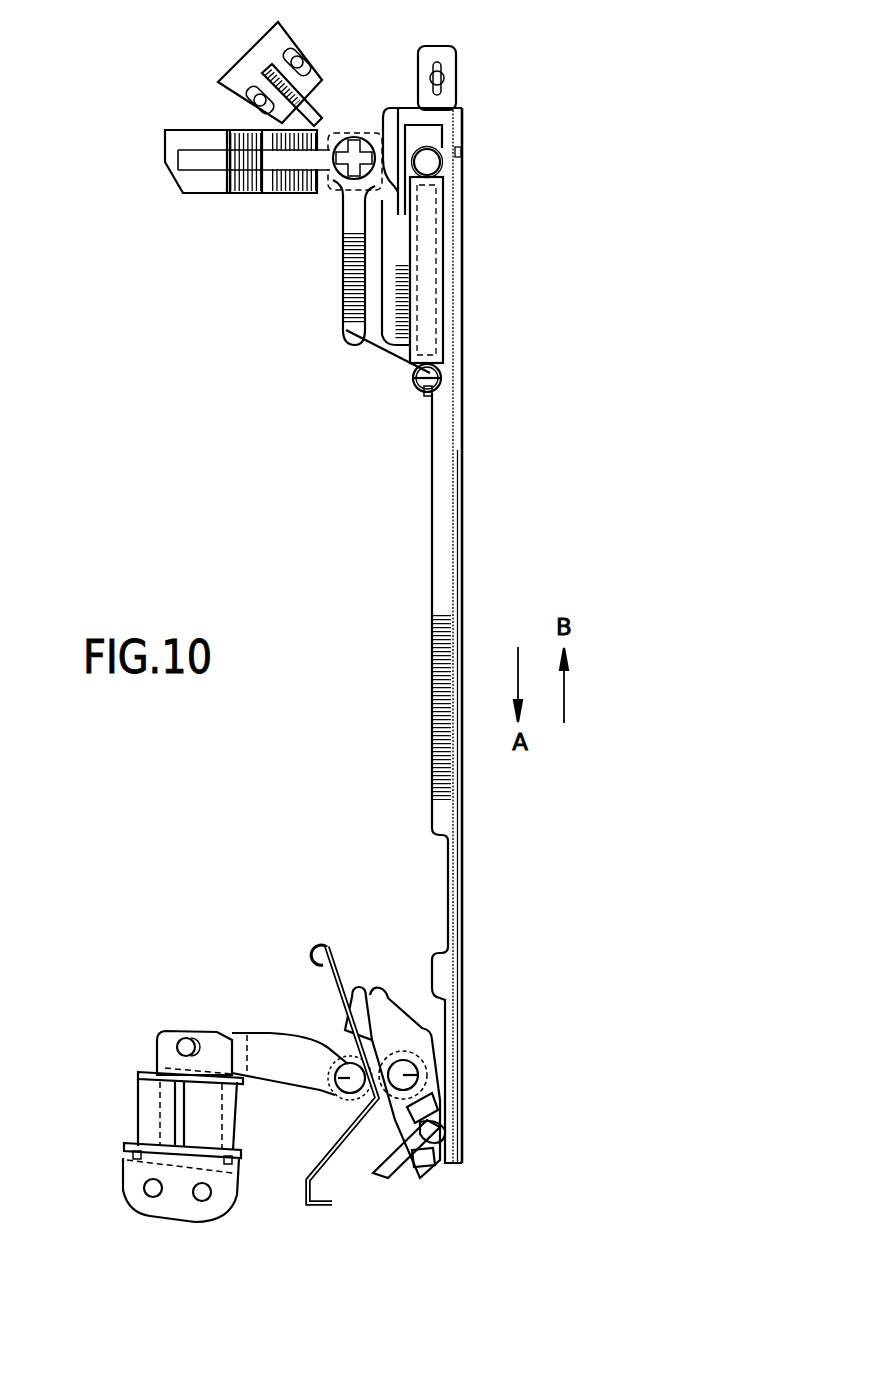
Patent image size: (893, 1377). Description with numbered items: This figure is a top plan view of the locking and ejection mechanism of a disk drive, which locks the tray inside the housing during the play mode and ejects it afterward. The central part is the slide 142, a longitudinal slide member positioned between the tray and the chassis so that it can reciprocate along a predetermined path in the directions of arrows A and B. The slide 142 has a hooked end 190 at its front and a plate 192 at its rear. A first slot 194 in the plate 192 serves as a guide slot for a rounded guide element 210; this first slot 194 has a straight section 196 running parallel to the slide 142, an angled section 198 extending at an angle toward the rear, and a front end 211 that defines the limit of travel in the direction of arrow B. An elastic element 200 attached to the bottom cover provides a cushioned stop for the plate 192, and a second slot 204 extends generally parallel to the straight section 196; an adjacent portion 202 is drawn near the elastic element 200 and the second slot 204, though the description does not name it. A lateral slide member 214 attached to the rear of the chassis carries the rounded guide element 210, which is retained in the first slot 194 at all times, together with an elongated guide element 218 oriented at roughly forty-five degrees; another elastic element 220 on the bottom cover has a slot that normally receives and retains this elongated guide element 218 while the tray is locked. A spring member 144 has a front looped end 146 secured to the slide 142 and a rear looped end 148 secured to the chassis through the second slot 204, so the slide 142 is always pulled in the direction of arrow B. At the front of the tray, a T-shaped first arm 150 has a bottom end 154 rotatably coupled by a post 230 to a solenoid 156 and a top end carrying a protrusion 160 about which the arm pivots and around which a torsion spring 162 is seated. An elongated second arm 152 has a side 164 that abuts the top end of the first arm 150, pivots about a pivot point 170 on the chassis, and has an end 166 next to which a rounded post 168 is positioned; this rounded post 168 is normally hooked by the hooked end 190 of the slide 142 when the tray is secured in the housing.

The slide 142 is at (462, 557).
The spring member 144 is at (432, 238).
The front looped end 146 is at (443, 380).
The rear looped end 148 is at (442, 158).
The first arm 150 is at (285, 1040).
The second arm 152 is at (393, 1133).
The bottom end 154 is at (212, 1030).
The solenoid 156 is at (173, 1208).
The protrusion 160 is at (340, 1085).
The torsion spring 162 is at (320, 945).
The side 164 is at (395, 1008).
The end 166 is at (420, 1168).
The rounded post 168 is at (432, 1132).
The pivot point 170 is at (407, 1077).
The hooked end 190 is at (443, 1162).
The plate 192 is at (348, 333).
The first slot 194 is at (374, 230).
The straight section 196 is at (345, 287).
The angled section 198 is at (392, 125).
The elastic element 200 is at (447, 52).
The housing block 202 is at (450, 117).
The second slot 204 is at (425, 137).
The rounded guide element 210 is at (333, 190).
The front end 211 is at (382, 333).
The lateral slide member 214 is at (187, 193).
The elongated guide element 218 is at (305, 112).
The elastic element 220 is at (250, 58).
The post 230 is at (185, 1040).